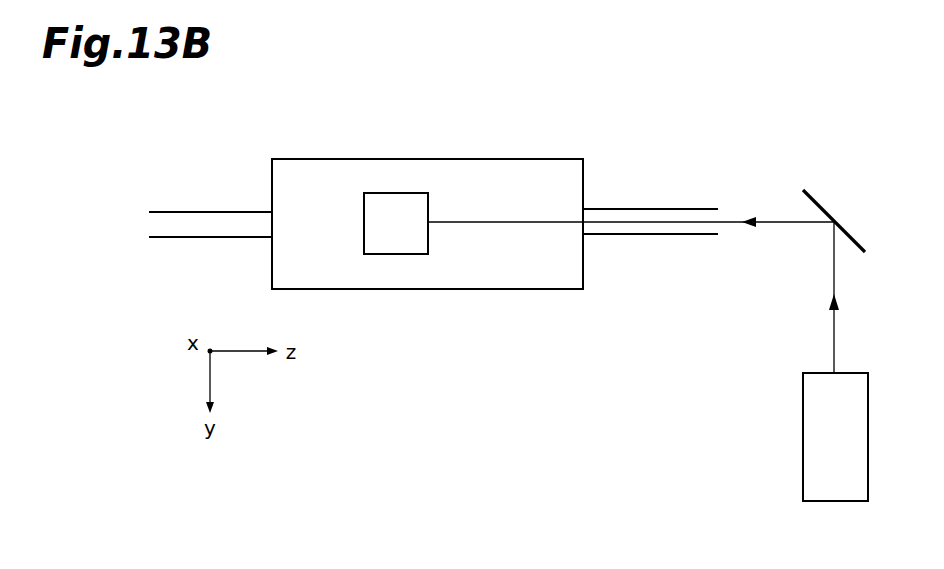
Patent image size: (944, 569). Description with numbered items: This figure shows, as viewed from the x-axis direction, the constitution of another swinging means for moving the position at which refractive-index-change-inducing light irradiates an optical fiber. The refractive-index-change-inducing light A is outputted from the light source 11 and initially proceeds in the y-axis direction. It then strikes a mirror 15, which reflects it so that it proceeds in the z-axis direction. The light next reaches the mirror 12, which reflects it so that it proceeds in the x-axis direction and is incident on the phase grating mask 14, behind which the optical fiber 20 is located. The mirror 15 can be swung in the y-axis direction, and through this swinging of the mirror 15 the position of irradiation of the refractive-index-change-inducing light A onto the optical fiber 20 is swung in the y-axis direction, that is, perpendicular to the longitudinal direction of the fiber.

The light source 11 is at (803, 442).
The mirror 12 is at (393, 193).
The phase grating mask 14 is at (298, 159).
The mirror 15 is at (821, 208).
The optical fiber 20 is at (198, 211).
The refractive-index-change-inducing light A is at (834, 334).